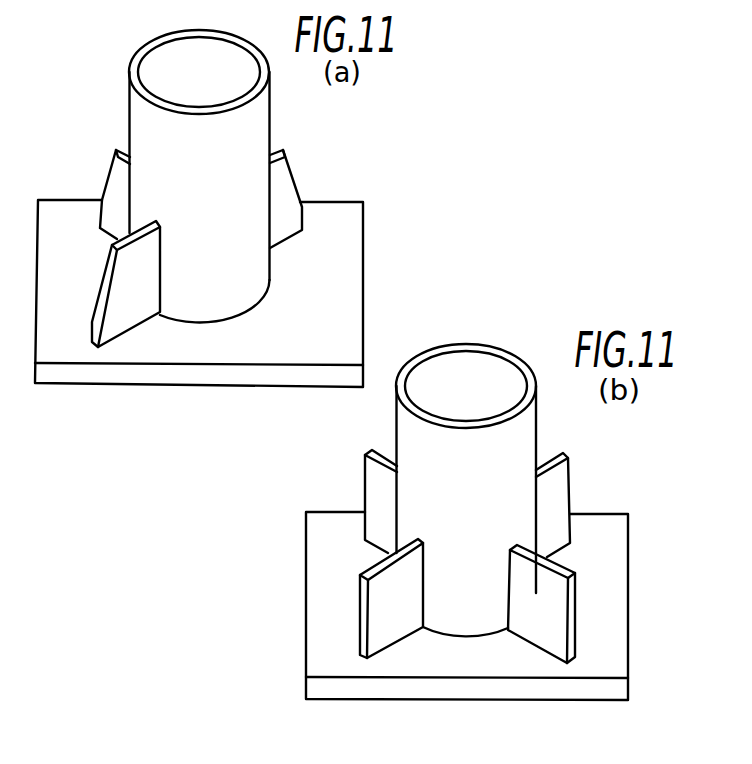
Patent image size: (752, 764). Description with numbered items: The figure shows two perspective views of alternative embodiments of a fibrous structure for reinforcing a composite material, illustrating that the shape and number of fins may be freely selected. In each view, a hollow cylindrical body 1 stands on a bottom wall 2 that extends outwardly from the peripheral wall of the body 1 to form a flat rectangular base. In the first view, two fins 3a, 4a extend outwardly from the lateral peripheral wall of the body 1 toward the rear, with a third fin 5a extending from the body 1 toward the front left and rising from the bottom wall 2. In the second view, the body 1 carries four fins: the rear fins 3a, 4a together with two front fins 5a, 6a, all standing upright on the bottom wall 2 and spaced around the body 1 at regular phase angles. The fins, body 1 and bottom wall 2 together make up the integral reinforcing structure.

In FIG. 11A, the cylindrical body 1 is at (247, 46).
In FIG. 11B, the cylindrical body 1 is at (518, 366).
In FIG. 11A, the bottom wall 2 is at (352, 297).
In FIG. 11B, the bottom wall 2 is at (620, 581).
In FIG. 11A, the fin 3a is at (118, 168).
In FIG. 11B, the fin 3a is at (373, 488).
In FIG. 11A, the fin 4a is at (288, 187).
In FIG. 11B, the fin 4a is at (563, 493).
In FIG. 11A, the fin 5a is at (120, 321).
In FIG. 11B, the fin 5a is at (387, 628).
In FIG. 11B, the fin 6a is at (548, 636).